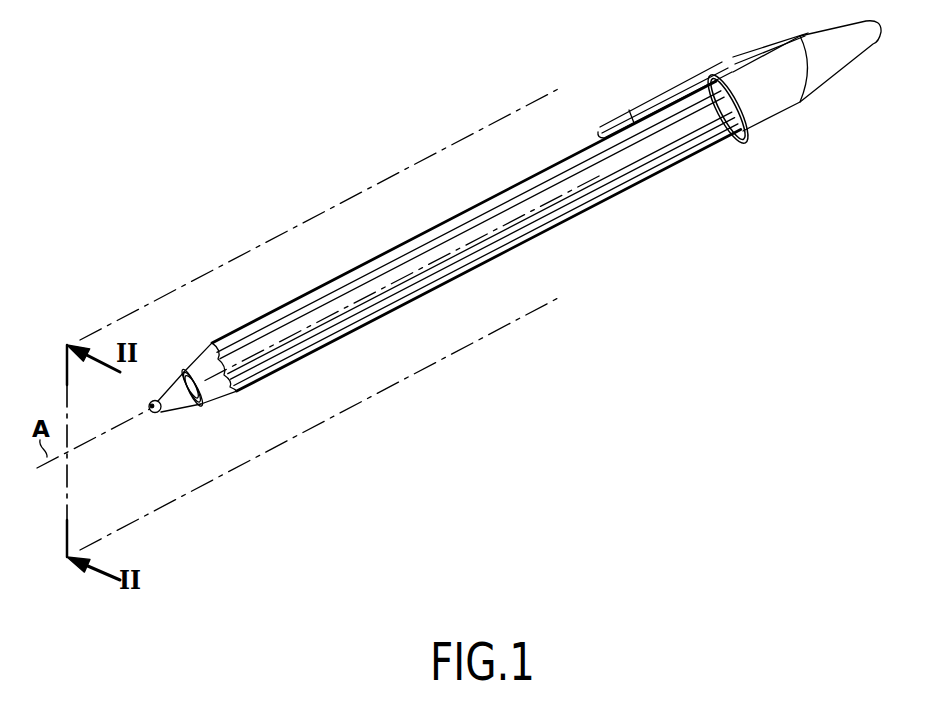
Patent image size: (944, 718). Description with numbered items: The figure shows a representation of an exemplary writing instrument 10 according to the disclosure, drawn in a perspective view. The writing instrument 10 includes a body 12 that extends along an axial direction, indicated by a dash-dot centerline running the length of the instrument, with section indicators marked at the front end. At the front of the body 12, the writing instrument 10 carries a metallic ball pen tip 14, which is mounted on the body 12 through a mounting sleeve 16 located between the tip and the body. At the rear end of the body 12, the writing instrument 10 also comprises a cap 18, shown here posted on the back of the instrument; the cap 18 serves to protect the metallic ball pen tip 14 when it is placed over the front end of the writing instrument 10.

The writing instrument 10 is at (479, 168).
The body 12 is at (543, 213).
The metallic ball pen tip 14 is at (158, 413).
The mounting sleeve 16 is at (180, 402).
The cap 18 is at (768, 103).